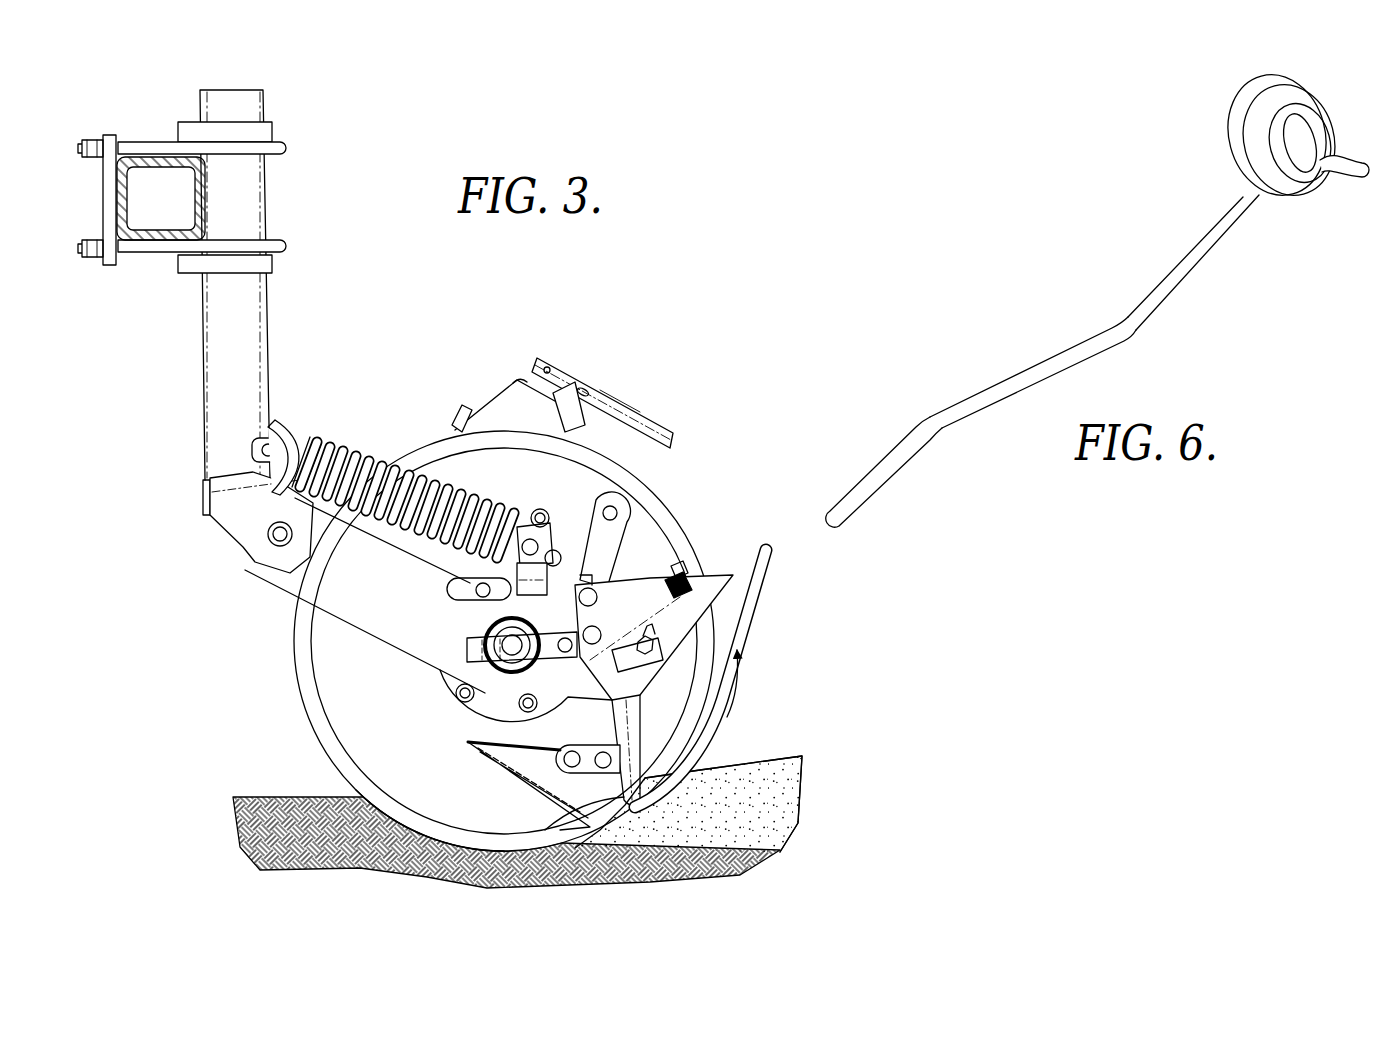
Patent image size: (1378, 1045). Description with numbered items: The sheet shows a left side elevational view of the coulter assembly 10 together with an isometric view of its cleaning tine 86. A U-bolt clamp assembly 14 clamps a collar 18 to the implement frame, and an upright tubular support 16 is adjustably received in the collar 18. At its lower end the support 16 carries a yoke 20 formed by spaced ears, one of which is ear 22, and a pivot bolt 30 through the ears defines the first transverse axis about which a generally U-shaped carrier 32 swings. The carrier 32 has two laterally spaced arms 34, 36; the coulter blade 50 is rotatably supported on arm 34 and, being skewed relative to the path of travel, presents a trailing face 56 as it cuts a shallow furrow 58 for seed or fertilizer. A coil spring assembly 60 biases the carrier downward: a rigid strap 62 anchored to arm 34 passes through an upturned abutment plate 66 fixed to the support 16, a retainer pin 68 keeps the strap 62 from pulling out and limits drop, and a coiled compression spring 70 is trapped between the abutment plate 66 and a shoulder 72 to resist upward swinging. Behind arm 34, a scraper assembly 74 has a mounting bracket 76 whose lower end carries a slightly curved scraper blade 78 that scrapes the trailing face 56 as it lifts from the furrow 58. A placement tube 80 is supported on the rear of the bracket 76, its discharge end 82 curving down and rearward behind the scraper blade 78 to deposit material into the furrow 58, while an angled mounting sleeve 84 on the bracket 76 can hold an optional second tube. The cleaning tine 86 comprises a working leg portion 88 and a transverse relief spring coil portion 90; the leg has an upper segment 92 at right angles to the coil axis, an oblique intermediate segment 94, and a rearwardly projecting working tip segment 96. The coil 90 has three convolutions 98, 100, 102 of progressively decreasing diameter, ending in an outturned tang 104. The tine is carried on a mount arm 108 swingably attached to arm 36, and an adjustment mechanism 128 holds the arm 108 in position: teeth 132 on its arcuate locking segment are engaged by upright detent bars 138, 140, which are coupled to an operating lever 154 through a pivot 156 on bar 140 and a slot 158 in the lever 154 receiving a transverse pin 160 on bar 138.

In FIG. 3, the coulter assembly 10 is at (430, 323).
In FIG. 3, the U-bolt clamp assembly 14 is at (160, 137).
In FIG. 3, the upright tubular support 16 is at (225, 318).
In FIG. 3, the collar 18 is at (273, 188).
In FIG. 3, the yoke 20 is at (232, 546).
In FIG. 3, the ear 22 is at (215, 505).
In FIG. 3, the pivot bolt 30 is at (285, 540).
In FIG. 3, the carrier 32 is at (342, 628).
In FIG. 3, the arm 34 is at (412, 650).
In FIG. 3, the arm 36 is at (515, 395).
In FIG. 3, the coulter blade 50 is at (692, 522).
In FIG. 3, the trailing face 56 is at (360, 748).
In FIG. 3, the furrow 58 is at (783, 790).
In FIG. 3, the coil spring assembly 60 is at (353, 445).
In FIG. 3, the strap 62 is at (266, 440).
In FIG. 3, the abutment plate 66 is at (283, 418).
In FIG. 3, the retainer pin 68 is at (262, 452).
In FIG. 3, the coiled compression spring 70 is at (342, 436).
In FIG. 3, the shoulder 72 is at (548, 540).
In FIG. 3, the scraper assembly 74 is at (540, 735).
In FIG. 3, the mounting bracket 76 is at (625, 595).
In FIG. 3, the scraper blade 78 is at (498, 775).
In FIG. 3, the placement tube 80 is at (760, 572).
In FIG. 3, the discharge end 82 is at (555, 815).
In FIG. 3, the mounting sleeve 84 is at (655, 645).
In FIG. 6, the cleaning tine 86 is at (1098, 292).
In FIG. 6, the working leg portion 88 is at (1033, 351).
In FIG. 6, the relief spring coil portion 90 is at (1249, 147).
In FIG. 6, the upper segment 92 is at (1213, 243).
In FIG. 6, the intermediate segment 94 is at (1002, 387).
In FIG. 6, the working tip segment 96 is at (882, 473).
In FIG. 6, the convolution 98 is at (1237, 140).
In FIG. 6, the convolution 100 is at (1300, 100).
In FIG. 6, the convolution 102 is at (1318, 147).
In FIG. 6, the outturned tang 104 is at (1353, 173).
In FIG. 3, the mount arm 108 is at (450, 423).
In FIG. 3, the adjustment mechanism 128 is at (547, 350).
In FIG. 3, the teeth 132 is at (470, 407).
In FIG. 3, the detent bar 138 is at (578, 415).
In FIG. 3, the detent bar 140 is at (537, 377).
In FIG. 3, the operating lever 154 is at (680, 433).
In FIG. 3, the pivot 156 is at (552, 373).
In FIG. 3, the slot 158 is at (620, 403).
In FIG. 3, the transverse pin 160 is at (578, 392).